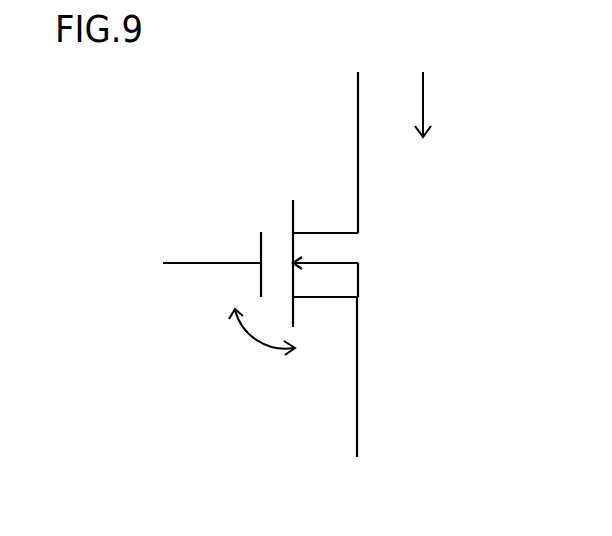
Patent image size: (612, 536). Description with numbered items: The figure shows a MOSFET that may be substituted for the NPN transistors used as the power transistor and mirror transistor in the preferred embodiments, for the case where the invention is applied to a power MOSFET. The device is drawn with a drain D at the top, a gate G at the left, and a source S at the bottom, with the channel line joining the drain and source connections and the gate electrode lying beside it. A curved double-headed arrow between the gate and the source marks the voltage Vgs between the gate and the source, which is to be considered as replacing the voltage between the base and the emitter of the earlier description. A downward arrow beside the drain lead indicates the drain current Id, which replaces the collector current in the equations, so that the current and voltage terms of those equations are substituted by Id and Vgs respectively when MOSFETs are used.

The drain D is at (365, 128).
The gate G is at (212, 243).
The source S is at (363, 401).
The voltage between the gate and the source Vgs is at (250, 341).
The drain current Id is at (472, 104).